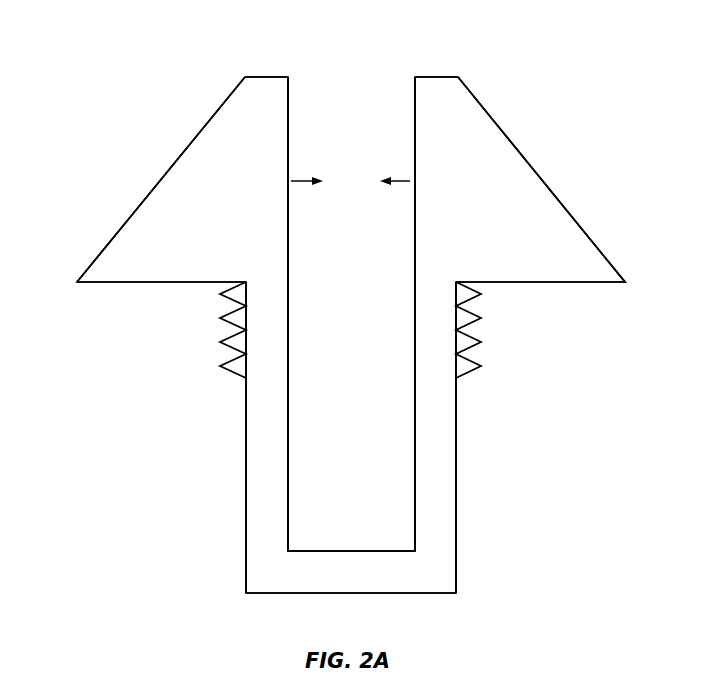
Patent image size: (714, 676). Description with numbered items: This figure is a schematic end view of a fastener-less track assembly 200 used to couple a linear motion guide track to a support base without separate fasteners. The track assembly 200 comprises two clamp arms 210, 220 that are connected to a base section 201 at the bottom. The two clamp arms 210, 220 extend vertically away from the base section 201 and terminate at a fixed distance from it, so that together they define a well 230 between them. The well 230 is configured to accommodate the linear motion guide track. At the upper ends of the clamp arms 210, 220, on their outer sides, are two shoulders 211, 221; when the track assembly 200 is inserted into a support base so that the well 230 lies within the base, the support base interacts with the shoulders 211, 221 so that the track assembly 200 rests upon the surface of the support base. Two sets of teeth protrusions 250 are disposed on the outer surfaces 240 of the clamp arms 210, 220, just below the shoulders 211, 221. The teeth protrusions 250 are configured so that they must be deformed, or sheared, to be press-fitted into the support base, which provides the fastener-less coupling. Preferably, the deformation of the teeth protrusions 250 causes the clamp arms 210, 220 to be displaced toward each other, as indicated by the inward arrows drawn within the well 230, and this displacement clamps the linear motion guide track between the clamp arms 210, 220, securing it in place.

The fastener-less track assembly 200 is at (99, 45).
The clamp arm 210 is at (268, 77).
The clamp arm 220 is at (435, 77).
The shoulder 211 is at (223, 266).
The shoulder 221 is at (525, 266).
The teeth protrusions 250 is at (215, 380).
The outer surfaces 240 is at (246, 490).
The well 230 is at (372, 506).
The base section 201 is at (372, 584).